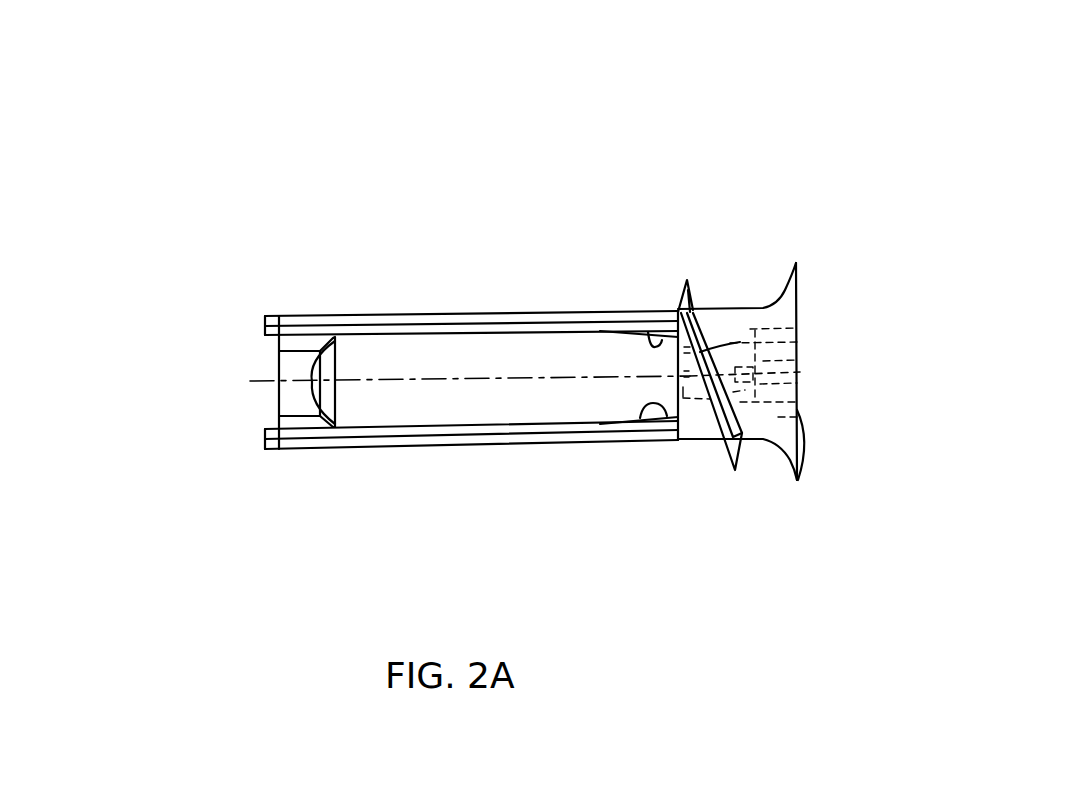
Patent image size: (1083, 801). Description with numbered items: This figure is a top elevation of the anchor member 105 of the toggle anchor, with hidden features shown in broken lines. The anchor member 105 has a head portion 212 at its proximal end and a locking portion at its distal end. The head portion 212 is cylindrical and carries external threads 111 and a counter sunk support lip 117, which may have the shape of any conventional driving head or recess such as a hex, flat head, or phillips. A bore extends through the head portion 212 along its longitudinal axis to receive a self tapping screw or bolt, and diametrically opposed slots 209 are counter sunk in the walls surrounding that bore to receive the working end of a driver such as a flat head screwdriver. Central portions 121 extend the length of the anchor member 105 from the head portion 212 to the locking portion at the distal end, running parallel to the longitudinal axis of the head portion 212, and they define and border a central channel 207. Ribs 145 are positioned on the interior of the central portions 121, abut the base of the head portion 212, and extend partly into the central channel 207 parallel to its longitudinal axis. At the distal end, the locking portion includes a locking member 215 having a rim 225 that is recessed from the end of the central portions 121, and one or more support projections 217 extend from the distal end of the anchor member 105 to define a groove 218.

The anchor member 105 is at (634, 252).
The external threads 111 is at (736, 474).
The counter sunk support lip 117 is at (796, 265).
The central portions 121 is at (368, 313).
The ribs 145 is at (655, 312).
The central channel 207 is at (614, 386).
The slots 209 is at (797, 337).
The head portion 212 is at (170, 186).
The locking member 215 is at (278, 386).
The support projections 217 is at (270, 341).
The groove 218 is at (260, 400).
The rim 225 is at (332, 342).